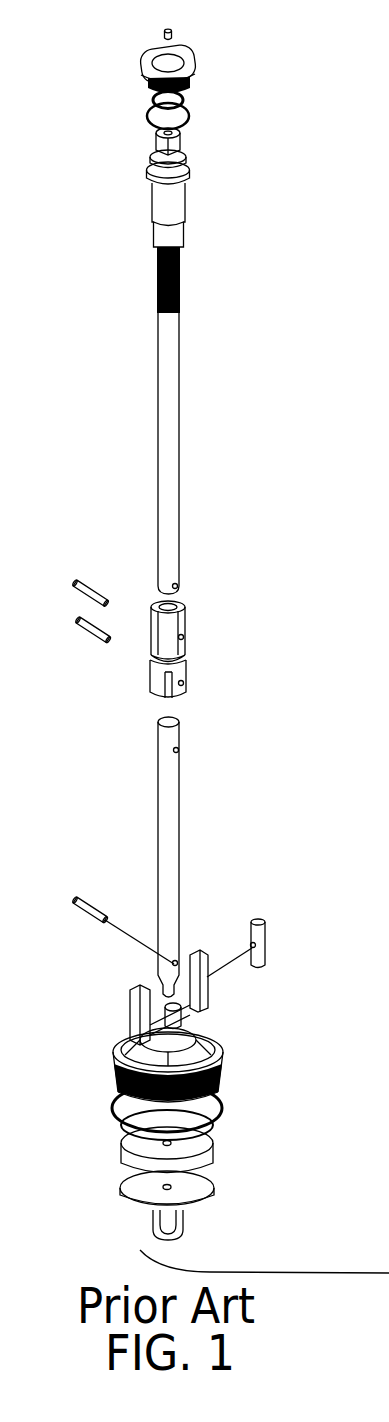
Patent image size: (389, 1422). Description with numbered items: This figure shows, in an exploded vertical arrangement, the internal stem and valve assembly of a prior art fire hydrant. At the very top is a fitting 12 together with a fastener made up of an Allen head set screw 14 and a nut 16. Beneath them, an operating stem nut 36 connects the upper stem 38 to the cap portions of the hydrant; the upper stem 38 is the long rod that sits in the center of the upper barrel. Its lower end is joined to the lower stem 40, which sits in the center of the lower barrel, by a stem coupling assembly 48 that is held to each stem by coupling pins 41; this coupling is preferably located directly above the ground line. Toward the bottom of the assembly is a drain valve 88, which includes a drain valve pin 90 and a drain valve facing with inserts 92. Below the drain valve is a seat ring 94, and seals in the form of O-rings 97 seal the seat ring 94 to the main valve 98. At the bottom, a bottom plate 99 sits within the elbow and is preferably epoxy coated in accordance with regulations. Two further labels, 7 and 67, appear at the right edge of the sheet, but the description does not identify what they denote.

The fitting 12 is at (173, 31).
The Allen head set screw 14 is at (150, 60).
The nut 16 is at (152, 82).
The operating stem nut 36 is at (182, 237).
The upper stem 38 is at (162, 418).
The coupling pins 41 is at (150, 678).
The stem coupling assembly 48 is at (185, 637).
The lower stem 40 is at (158, 835).
The drain valve pin 90 is at (88, 903).
The drain valve facing with inserts 92 is at (265, 932).
The drain valve 88 is at (138, 1012).
The seat ring 94 is at (115, 1068).
The O-rings 97 is at (118, 1128).
The main valve 98 is at (121, 1155).
The bottom plate 99 is at (182, 1222).
The reference 7 is at (384, 501).
The reference 67 is at (372, 592).